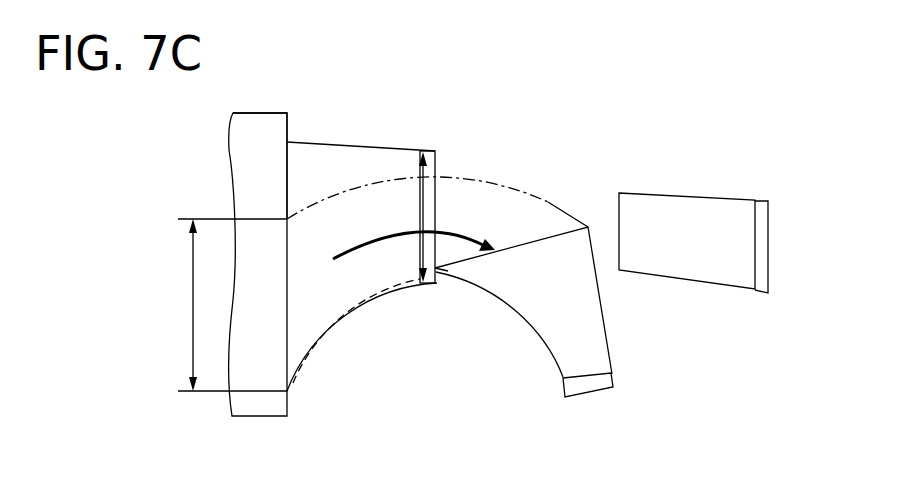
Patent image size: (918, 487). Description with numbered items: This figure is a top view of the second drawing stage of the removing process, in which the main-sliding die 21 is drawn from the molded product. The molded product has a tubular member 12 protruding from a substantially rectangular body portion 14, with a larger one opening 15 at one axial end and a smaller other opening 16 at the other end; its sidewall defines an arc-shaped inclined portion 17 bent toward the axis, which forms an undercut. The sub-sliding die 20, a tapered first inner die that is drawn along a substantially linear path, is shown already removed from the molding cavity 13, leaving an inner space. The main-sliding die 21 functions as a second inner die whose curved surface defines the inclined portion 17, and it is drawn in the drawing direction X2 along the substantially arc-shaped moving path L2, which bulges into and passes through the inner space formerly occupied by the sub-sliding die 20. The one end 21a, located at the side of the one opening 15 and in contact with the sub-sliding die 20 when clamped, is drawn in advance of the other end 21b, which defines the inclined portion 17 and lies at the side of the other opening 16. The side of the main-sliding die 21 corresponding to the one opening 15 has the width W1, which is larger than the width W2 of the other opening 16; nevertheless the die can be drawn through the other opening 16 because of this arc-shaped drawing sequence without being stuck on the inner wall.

The tubular member 12 is at (352, 142).
The molding cavity 13 is at (346, 238).
The body portion 14 is at (242, 181).
The one opening 15 is at (287, 163).
The other opening 16 is at (437, 190).
The inclined portion 17 is at (346, 313).
The sub-sliding die 20 is at (712, 215).
The main-sliding die 21 is at (543, 312).
The one end of the main-sliding die 21a is at (589, 226).
The other end of the main-sliding die 21b is at (440, 276).
The width W1 is at (193, 298).
The width W2 is at (420, 258).
The drawing direction X2 is at (465, 232).
The moving path L2 is at (548, 170).